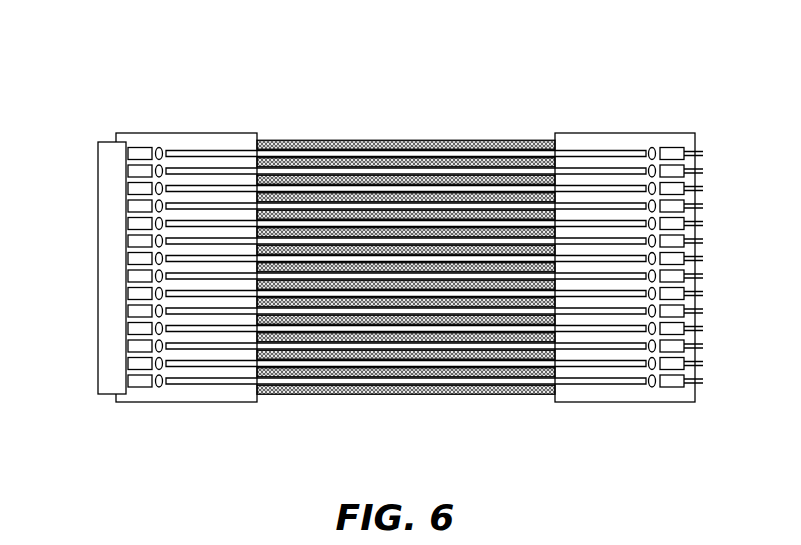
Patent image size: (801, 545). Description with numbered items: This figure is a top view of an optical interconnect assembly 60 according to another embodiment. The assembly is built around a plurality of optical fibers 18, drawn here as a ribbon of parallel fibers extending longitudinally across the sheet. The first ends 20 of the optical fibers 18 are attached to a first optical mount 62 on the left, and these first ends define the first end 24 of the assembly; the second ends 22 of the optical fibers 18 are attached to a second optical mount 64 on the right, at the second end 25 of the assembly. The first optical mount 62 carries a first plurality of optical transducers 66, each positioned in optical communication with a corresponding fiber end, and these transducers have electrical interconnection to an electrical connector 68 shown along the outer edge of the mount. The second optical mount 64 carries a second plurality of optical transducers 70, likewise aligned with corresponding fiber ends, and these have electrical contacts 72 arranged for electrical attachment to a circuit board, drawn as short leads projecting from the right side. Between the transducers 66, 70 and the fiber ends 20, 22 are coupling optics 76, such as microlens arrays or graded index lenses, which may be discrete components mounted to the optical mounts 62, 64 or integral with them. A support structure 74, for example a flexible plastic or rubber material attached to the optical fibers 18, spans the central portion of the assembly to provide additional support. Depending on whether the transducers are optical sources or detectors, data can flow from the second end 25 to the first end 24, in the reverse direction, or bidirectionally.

The optical interconnect assembly 60 is at (78, 50).
The optical fibers 18 is at (368, 150).
The first ends 20 is at (175, 383).
The second ends 22 is at (633, 380).
The first end 24 is at (70, 265).
The second end 25 is at (716, 262).
The first optical mount 62 is at (233, 395).
The second optical mount 64 is at (562, 393).
The first plurality of optical transducers 66 is at (138, 148).
The electrical connector 68 is at (107, 337).
The second plurality of optical transducers 70 is at (670, 152).
The electrical contacts 72 is at (699, 152).
The support structure 74 is at (464, 388).
The coupling optics 76 is at (159, 146).